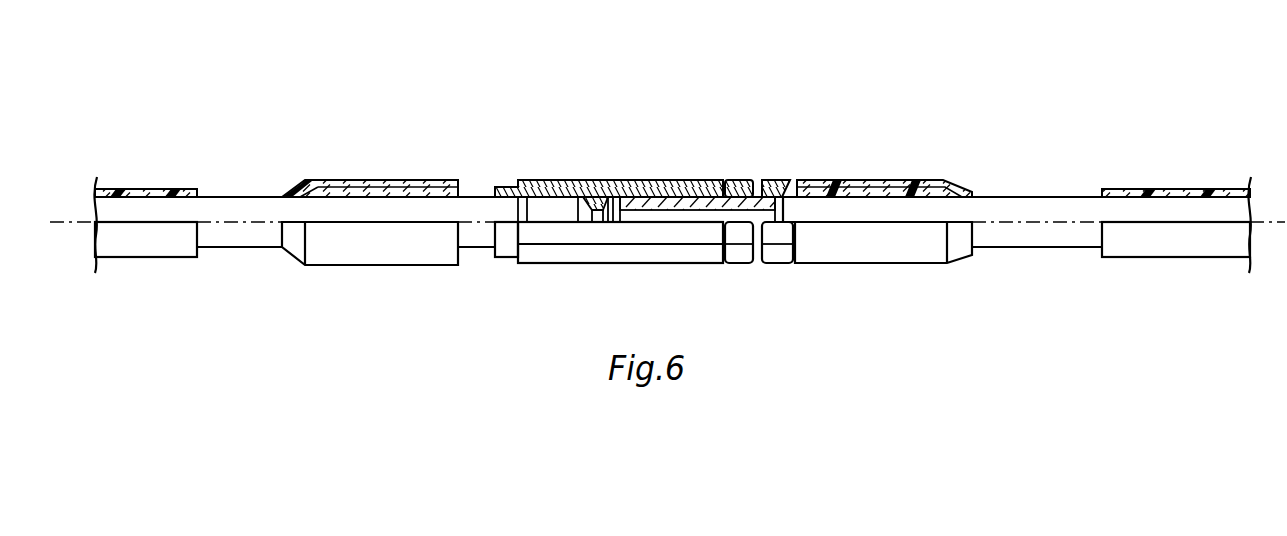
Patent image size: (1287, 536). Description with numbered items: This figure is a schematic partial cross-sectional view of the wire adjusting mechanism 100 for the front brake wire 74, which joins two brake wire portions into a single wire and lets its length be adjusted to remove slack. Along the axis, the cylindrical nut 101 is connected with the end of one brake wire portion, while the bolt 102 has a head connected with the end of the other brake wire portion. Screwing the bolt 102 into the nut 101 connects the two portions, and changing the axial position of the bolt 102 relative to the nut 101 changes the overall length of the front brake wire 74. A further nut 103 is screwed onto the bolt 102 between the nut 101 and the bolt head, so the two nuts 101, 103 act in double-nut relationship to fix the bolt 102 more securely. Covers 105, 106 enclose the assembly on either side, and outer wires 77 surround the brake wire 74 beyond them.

The front brake wire 74 is at (236, 197).
The outer wires 77 is at (148, 194).
The wire adjusting mechanism 100 is at (828, 131).
The cylindrical nut 101 is at (594, 185).
The bolt 102 is at (771, 182).
The nut 103 is at (741, 182).
The cover 105 is at (311, 188).
The cover 106 is at (940, 187).